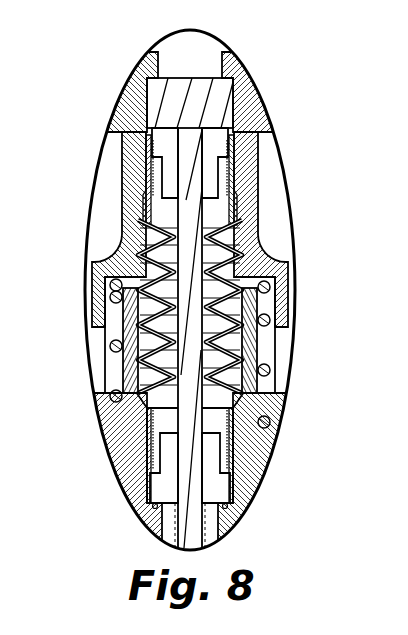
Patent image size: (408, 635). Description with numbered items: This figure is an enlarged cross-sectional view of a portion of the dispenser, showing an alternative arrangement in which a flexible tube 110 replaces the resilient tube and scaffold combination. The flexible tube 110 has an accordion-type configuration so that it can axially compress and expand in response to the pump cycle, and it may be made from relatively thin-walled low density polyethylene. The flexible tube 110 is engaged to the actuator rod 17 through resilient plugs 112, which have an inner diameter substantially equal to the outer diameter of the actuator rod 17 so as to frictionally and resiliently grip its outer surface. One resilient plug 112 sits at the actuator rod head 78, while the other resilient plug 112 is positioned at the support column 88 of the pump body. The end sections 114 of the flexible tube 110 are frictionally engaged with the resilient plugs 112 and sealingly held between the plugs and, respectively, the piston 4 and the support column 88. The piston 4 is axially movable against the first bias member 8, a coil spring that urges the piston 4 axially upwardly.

The piston 4 is at (243, 105).
The actuator rod head 78 is at (173, 103).
The actuator rod 17 is at (190, 333).
The resilient plugs 112 is at (157, 172).
The end sections 114 is at (233, 200).
The flexible tube 110 is at (240, 248).
The first bias member 8 is at (253, 322).
The support column 88 is at (133, 483).